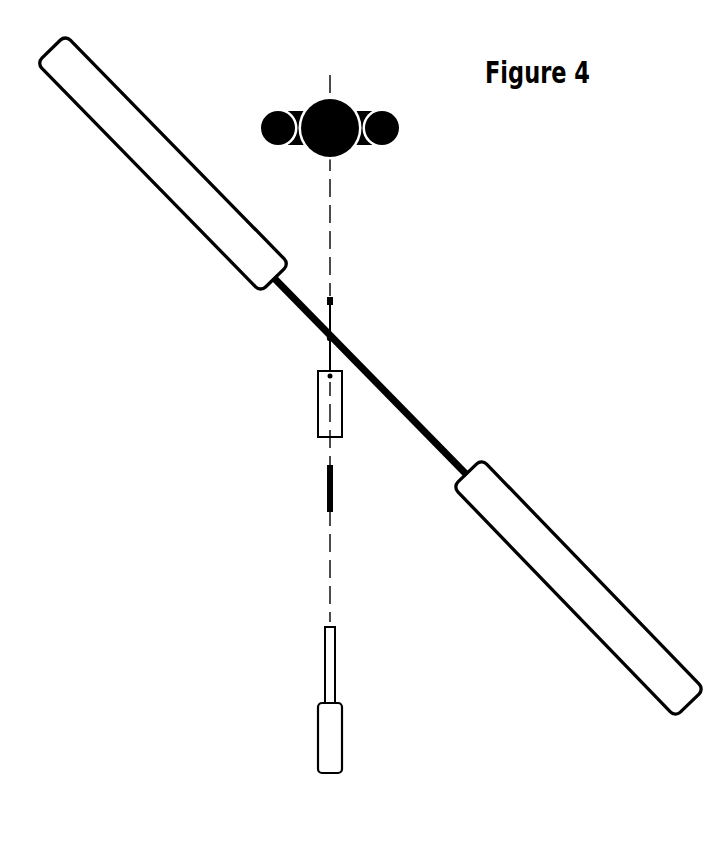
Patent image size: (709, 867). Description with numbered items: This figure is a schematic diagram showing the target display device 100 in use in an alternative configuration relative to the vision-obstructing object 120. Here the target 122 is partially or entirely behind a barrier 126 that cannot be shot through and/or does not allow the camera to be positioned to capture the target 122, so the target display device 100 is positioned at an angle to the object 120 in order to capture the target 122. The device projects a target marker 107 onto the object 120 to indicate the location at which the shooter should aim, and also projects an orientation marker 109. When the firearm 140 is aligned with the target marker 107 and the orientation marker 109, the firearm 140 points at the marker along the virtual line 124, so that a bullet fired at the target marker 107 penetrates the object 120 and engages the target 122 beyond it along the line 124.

The target display device 100 is at (312, 418).
The target marker 107 is at (320, 340).
The orientation marker 109 is at (340, 487).
The vision-obstructing object 120 is at (432, 427).
The target 122 is at (408, 127).
The virtual line 124 is at (335, 240).
The barrier 126 is at (542, 507).
The firearm 140 is at (345, 677).